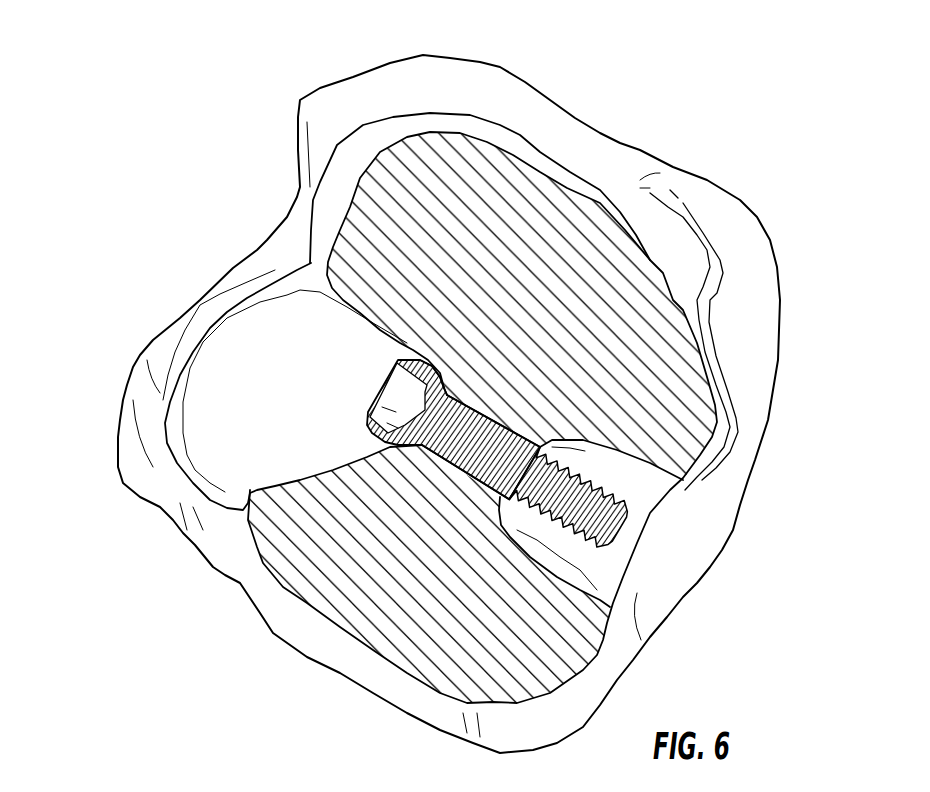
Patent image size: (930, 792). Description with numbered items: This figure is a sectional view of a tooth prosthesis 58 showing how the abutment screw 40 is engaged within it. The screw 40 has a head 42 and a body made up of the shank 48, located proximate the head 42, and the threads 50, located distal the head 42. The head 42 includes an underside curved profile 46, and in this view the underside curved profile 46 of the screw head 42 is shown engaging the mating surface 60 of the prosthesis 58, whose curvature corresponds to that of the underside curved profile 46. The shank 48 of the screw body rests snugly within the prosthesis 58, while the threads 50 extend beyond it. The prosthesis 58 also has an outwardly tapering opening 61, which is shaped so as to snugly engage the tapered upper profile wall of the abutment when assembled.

The abutment screw 40 is at (448, 528).
The head 42 is at (408, 401).
The underside curved profile 46 is at (383, 450).
The shank 48 is at (523, 437).
The threads 50 is at (600, 531).
The tooth prosthesis 58 is at (473, 60).
The mating surface 60 is at (445, 385).
The outwardly tapering opening 61 is at (607, 463).